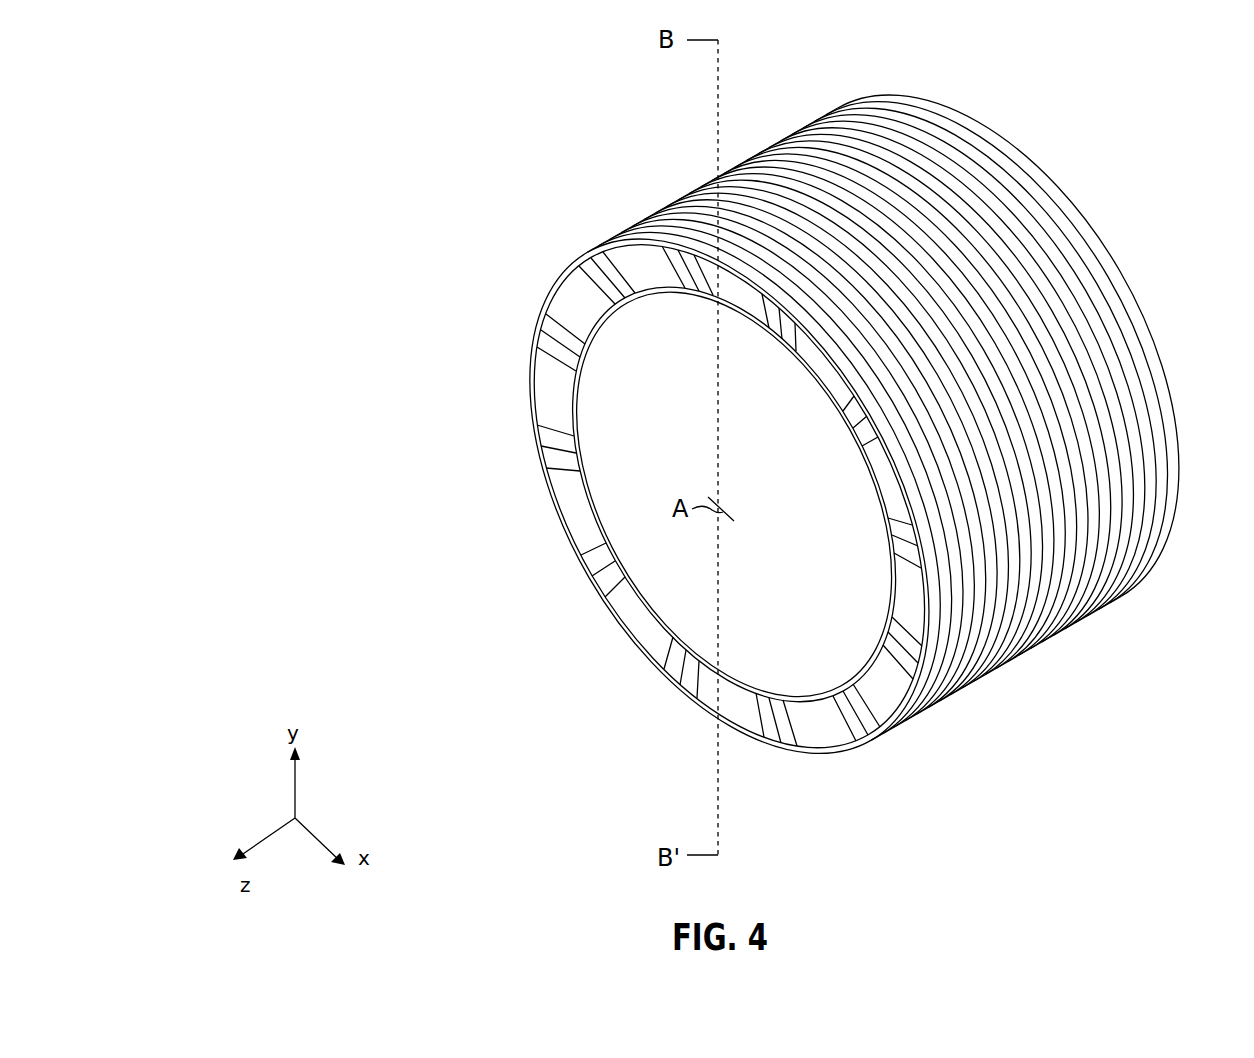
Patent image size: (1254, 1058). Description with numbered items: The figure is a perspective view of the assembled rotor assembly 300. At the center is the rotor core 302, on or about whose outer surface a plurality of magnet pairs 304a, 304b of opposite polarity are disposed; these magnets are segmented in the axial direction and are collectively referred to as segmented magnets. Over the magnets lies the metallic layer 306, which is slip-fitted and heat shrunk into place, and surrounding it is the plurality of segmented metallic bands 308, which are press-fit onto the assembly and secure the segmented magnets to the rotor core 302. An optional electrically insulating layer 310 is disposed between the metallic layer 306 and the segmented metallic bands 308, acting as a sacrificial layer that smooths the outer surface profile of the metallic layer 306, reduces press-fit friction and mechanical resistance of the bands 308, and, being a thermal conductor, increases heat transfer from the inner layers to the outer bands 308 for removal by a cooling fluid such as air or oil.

The rotor assembly 300 is at (670, 438).
The rotor core 302 is at (608, 493).
The magnet pair 304a is at (548, 367).
The magnet pair 304b is at (565, 303).
The metallic layer 306 is at (603, 250).
The segmented metallic bands 308 is at (852, 130).
The electrically insulating layer 310 is at (687, 240).